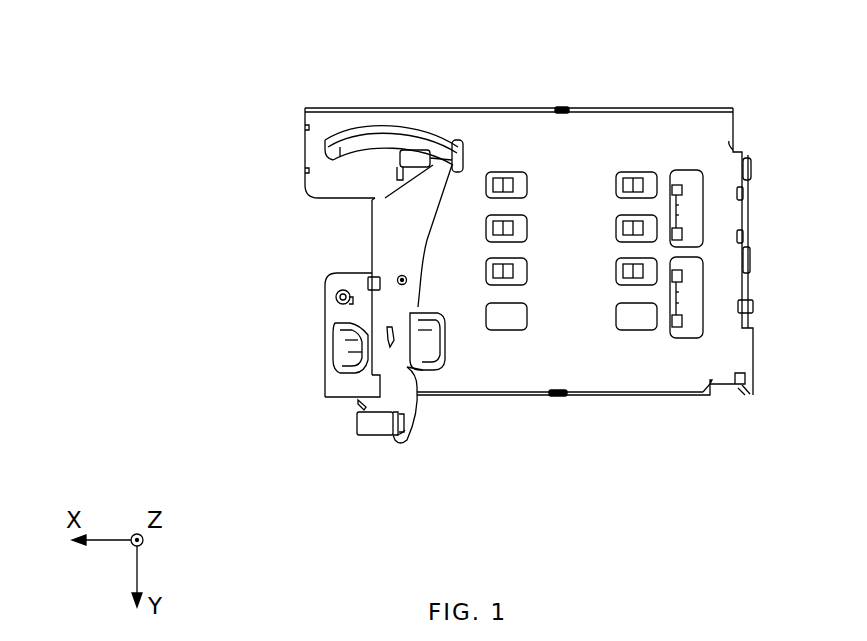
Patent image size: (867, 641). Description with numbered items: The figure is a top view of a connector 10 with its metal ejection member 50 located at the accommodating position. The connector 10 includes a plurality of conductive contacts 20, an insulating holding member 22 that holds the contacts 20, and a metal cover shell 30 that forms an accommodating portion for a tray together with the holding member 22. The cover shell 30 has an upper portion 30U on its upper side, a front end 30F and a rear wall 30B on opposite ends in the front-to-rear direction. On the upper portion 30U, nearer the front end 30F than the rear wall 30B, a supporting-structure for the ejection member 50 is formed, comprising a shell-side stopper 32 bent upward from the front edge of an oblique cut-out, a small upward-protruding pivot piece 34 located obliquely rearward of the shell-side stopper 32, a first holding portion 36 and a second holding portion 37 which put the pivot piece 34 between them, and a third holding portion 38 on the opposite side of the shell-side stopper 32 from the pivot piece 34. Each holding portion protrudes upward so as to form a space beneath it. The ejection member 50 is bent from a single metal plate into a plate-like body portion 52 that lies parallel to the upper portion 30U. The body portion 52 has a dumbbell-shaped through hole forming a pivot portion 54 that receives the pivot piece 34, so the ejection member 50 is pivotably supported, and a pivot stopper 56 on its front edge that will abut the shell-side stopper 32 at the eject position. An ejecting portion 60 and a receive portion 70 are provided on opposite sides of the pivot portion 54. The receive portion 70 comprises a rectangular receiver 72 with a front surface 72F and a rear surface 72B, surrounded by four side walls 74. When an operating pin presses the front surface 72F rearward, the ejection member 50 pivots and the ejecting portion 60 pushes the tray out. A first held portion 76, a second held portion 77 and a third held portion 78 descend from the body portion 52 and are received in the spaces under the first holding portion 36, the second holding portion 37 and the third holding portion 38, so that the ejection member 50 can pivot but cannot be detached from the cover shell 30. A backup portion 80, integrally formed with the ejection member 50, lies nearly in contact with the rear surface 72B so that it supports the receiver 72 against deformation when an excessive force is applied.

The connector 10 is at (643, 97).
The contacts 20 is at (500, 185).
The holding member 22 is at (519, 180).
The cover shell 30 is at (735, 130).
The upper portion 30U is at (529, 251).
The front end 30F is at (305, 140).
The rear wall 30B is at (745, 213).
The shell-side stopper 32 is at (345, 305).
The pivot piece 34 is at (350, 357).
The first holding portion 36 is at (443, 347).
The second holding portion 37 is at (340, 355).
The third holding portion 38 is at (386, 140).
The ejection member 50 is at (372, 245).
The body portion 52 is at (348, 335).
The pivot portion 54 is at (390, 343).
The pivot stopper 56 is at (368, 283).
The ejecting portion 60 is at (372, 218).
The receive portion 70 is at (378, 437).
The receiver 72 is at (360, 440).
The front surface 72F is at (375, 423).
The rear surface 72B is at (397, 433).
The side walls 74 is at (358, 422).
The first held portion 76 is at (420, 343).
The second held portion 77 is at (337, 333).
The third held portion 78 is at (440, 160).
The backup portion 80 is at (410, 417).